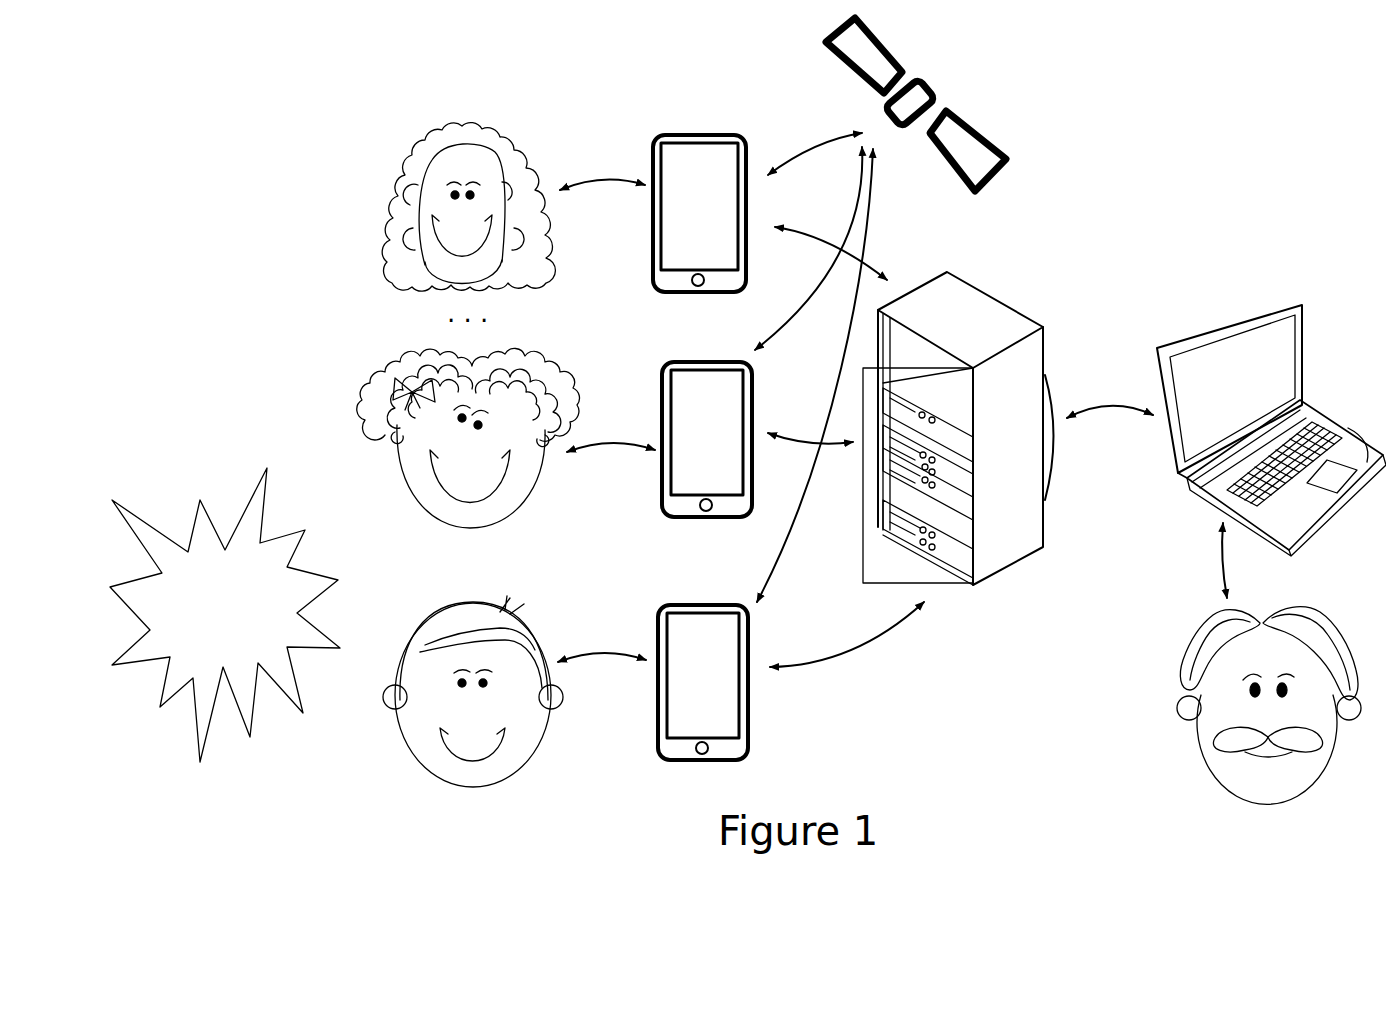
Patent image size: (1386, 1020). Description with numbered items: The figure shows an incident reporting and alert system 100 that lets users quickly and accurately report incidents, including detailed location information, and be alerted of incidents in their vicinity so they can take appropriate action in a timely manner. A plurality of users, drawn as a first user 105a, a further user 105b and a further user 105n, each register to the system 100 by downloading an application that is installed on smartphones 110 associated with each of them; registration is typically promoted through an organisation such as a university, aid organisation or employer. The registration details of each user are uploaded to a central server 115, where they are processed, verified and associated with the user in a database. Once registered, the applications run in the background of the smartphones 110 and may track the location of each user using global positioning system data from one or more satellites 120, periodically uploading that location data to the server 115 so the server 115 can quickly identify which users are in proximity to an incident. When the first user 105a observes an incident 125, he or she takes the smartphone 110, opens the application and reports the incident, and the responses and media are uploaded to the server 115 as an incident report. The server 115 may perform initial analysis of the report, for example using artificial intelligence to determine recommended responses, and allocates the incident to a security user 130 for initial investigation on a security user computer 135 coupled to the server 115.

The incident reporting and alert system 100 is at (212, 195).
The user 105n is at (397, 163).
The user 105b is at (370, 390).
The first user 105a is at (410, 615).
The smartphone 110 is at (663, 130).
The central server 115 is at (1057, 340).
The satellite 120 is at (963, 105).
The incident 125 is at (230, 518).
The security user 130 is at (1172, 710).
The security user computer 135 is at (1265, 312).